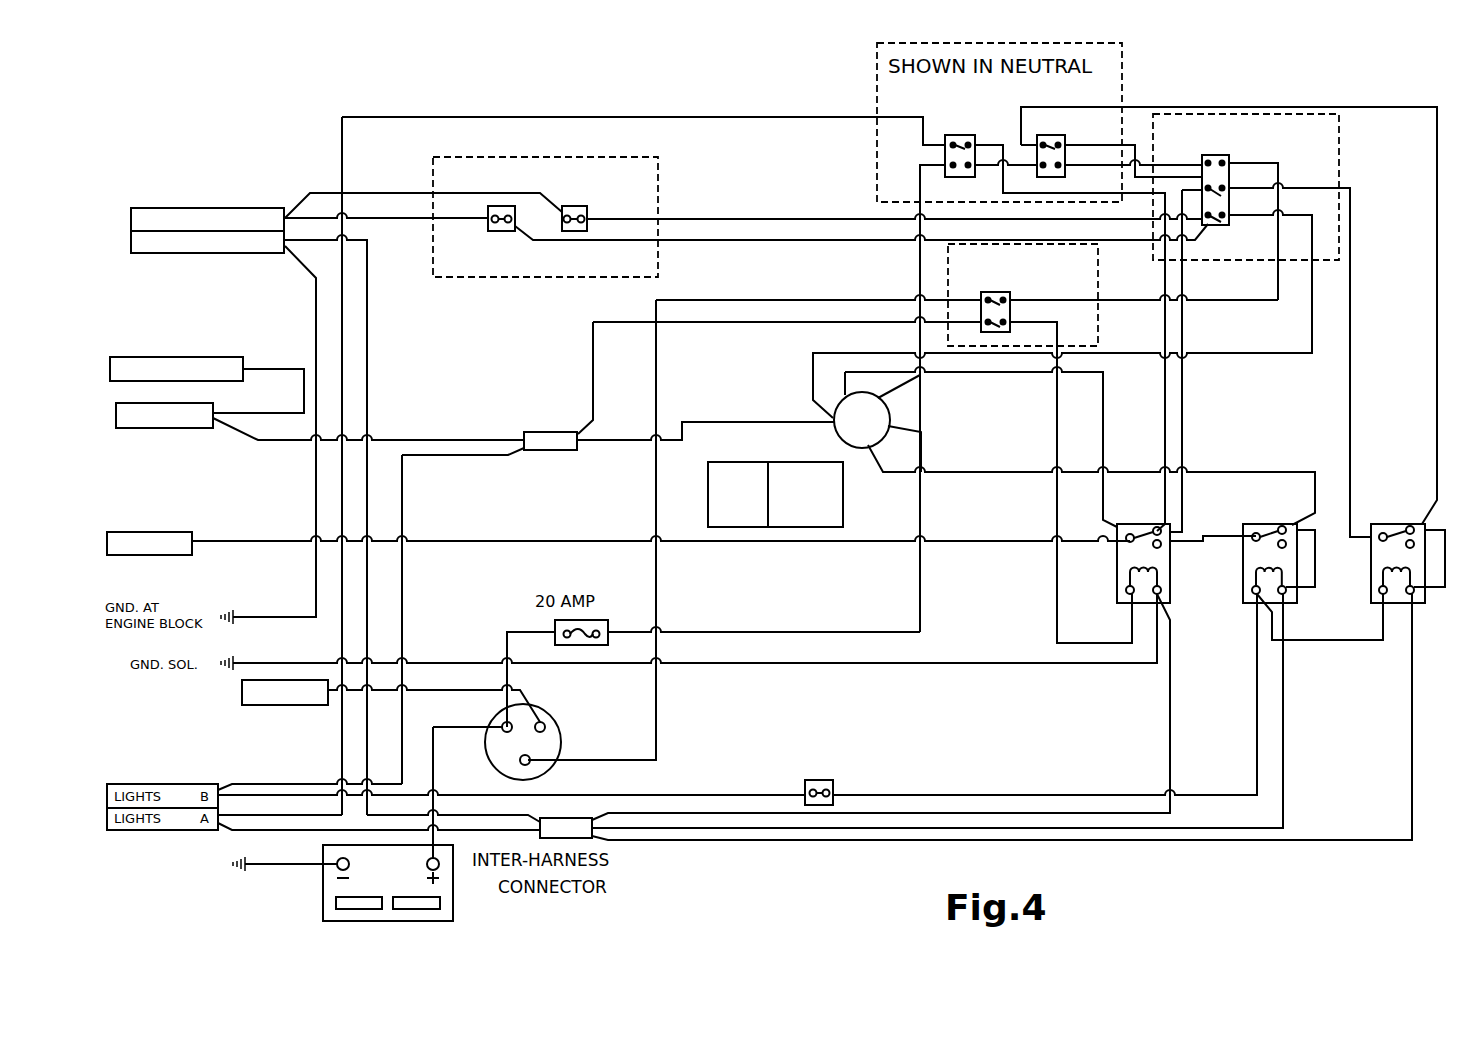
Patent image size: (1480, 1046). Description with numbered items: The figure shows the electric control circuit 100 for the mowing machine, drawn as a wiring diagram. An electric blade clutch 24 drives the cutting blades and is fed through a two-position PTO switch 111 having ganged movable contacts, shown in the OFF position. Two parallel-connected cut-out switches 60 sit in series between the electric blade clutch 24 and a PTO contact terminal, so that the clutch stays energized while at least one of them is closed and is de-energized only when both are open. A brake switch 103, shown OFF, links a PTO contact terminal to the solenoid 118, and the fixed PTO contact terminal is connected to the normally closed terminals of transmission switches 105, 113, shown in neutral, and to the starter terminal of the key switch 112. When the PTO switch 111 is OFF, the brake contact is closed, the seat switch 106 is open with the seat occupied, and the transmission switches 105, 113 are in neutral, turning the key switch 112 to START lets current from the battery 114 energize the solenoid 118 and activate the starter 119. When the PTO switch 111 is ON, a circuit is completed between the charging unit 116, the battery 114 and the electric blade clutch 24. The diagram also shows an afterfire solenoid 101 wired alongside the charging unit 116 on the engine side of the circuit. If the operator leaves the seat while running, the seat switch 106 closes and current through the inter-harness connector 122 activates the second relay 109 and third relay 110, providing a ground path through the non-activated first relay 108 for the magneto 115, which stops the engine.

The electric control circuit 100 is at (462, 85).
The electric blade clutch 24 is at (176, 208).
The cut-out switches 60 is at (572, 206).
The afterfire solenoid 101 is at (138, 357).
The charging unit 116 is at (170, 428).
The magneto 115 is at (130, 532).
The starter 119 is at (290, 705).
The inter-harness connector 122 is at (548, 452).
The solenoid 118 is at (548, 712).
The battery 114 is at (455, 887).
The seat switch 106 is at (812, 780).
The transmission switch 105 is at (962, 135).
The transmission switch 113 is at (1052, 135).
The PTO switch 111 is at (1215, 156).
The brake switch 103 is at (995, 292).
The key switch 112 is at (892, 412).
The first relay 108 is at (1130, 524).
The second relay 109 is at (1256, 524).
The third relay 110 is at (1383, 524).